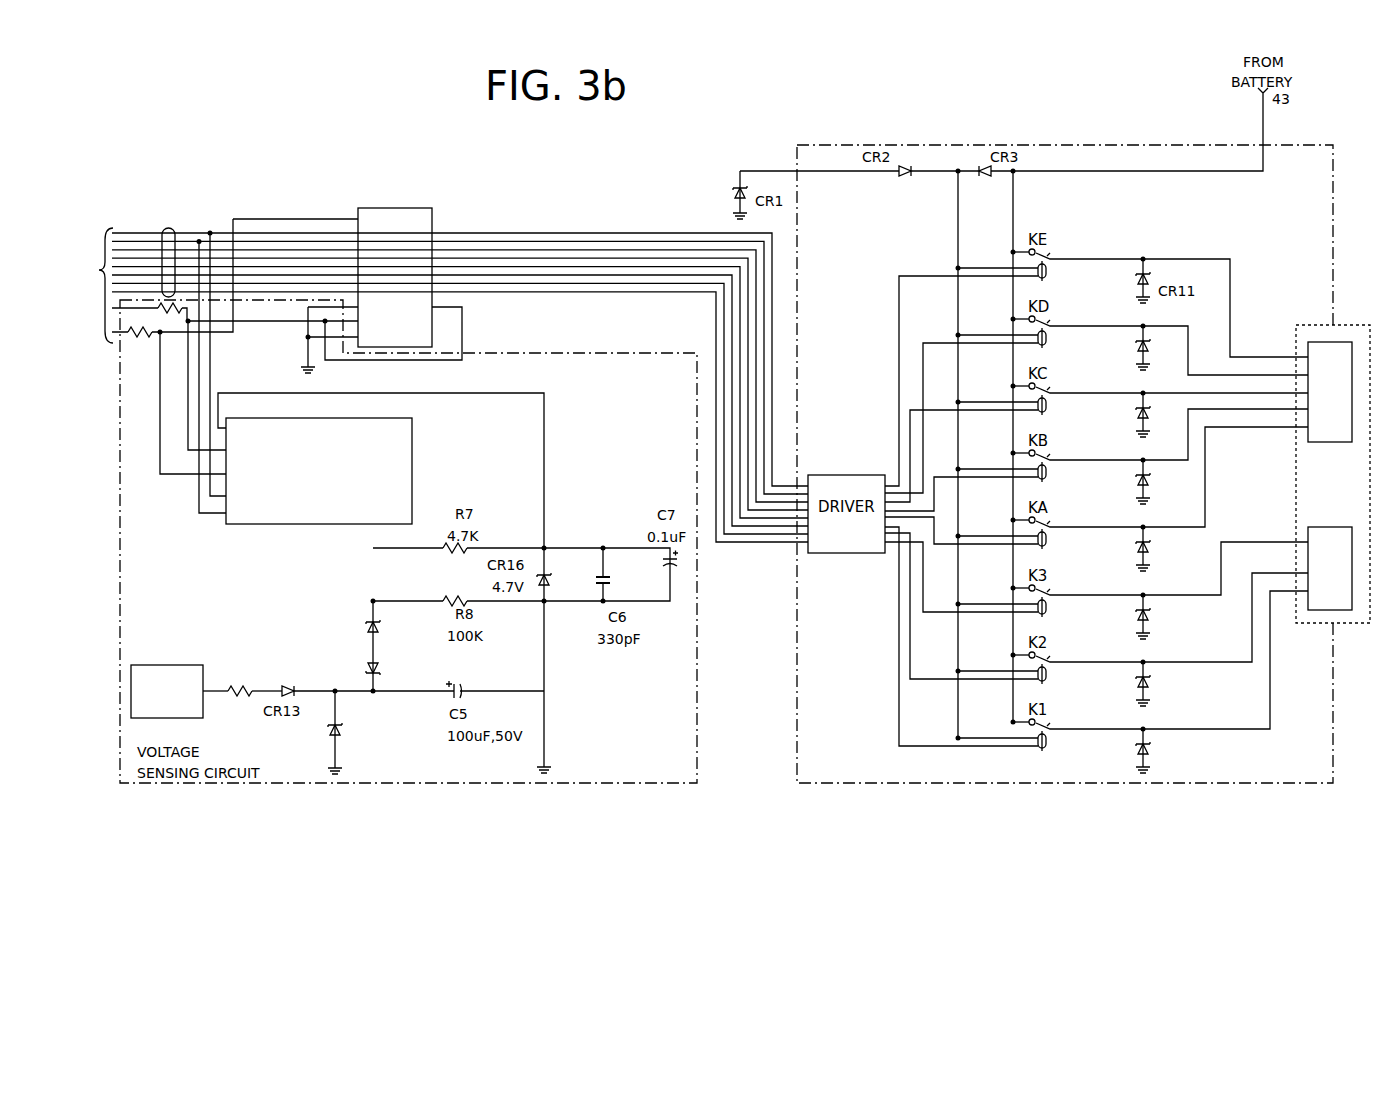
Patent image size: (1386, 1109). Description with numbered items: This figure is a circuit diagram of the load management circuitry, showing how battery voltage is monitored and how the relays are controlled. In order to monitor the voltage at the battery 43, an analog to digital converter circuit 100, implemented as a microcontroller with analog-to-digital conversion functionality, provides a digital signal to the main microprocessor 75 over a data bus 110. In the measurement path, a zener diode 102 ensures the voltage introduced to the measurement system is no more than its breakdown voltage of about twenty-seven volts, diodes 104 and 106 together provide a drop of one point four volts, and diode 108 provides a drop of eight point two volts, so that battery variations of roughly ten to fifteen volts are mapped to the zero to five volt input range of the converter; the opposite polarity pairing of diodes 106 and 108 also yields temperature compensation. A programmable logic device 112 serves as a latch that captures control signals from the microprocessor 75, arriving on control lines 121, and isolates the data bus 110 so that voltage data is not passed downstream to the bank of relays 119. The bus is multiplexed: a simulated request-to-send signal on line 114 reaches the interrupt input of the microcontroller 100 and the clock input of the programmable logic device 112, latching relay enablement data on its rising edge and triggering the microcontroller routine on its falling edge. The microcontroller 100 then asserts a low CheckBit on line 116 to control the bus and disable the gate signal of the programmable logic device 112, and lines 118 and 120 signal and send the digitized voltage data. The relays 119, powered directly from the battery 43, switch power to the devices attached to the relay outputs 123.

The battery 43 is at (179, 691).
The microprocessor 75 is at (96, 291).
The analog to digital converter circuit 100 is at (298, 524).
The zener diode 102 is at (327, 726).
The diode 104 is at (233, 693).
The diode 106 is at (382, 627).
The diode 108 is at (383, 668).
The data bus 110 is at (106, 200).
The programmable logic device 112 is at (418, 207).
The request to send line 114 is at (160, 478).
The CheckBit line 116 is at (188, 441).
The signal line 118 is at (200, 514).
The bank of relays 119 is at (1065, 464).
The signal line 120 is at (218, 514).
The control lines 121 is at (174, 230).
The relay outputs 123 is at (1300, 468).